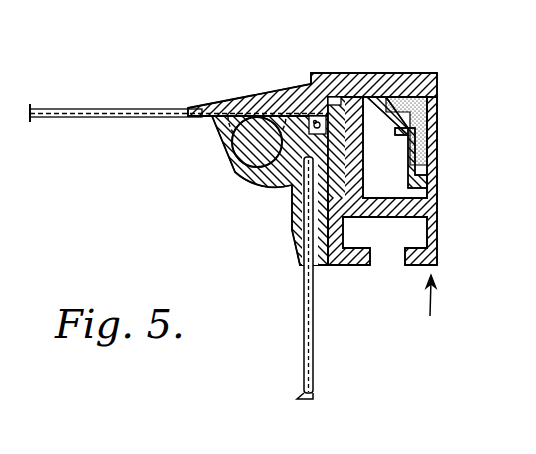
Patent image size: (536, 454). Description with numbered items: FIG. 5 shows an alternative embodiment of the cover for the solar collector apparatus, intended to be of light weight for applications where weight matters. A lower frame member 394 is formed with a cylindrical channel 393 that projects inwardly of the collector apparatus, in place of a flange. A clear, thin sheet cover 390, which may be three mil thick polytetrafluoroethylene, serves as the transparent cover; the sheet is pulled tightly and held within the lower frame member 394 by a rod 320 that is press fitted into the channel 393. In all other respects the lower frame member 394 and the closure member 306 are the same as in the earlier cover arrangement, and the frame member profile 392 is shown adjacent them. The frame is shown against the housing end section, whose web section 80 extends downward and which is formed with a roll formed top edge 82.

The thin sheet cover 390 is at (84, 107).
The closure member 306 is at (396, 70).
The rod 320 is at (218, 135).
The cylindrical channel 393 is at (242, 177).
The channel frame member 392 is at (440, 218).
The lower frame member 394 is at (445, 310).
The roll formed top edge 82 is at (310, 258).
The web section 80 is at (311, 366).